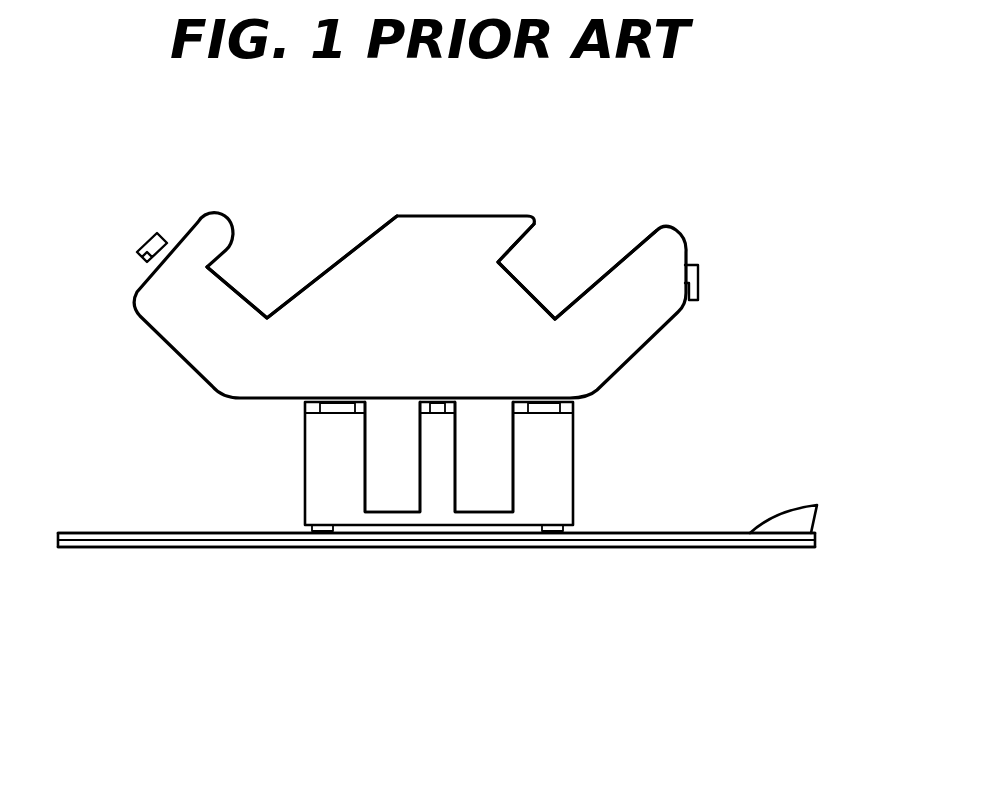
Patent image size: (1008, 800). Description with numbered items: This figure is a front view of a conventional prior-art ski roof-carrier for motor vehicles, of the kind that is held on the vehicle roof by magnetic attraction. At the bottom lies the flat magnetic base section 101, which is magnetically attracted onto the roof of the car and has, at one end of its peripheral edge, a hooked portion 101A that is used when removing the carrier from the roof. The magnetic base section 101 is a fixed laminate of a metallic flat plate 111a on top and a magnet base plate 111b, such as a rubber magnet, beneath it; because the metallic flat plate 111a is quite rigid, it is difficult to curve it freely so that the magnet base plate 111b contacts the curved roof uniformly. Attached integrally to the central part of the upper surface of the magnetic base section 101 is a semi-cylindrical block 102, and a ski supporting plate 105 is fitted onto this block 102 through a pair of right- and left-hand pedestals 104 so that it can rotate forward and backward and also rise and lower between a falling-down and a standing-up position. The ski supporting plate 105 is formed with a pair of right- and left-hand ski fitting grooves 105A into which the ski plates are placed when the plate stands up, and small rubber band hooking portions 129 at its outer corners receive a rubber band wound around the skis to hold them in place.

The magnetic base section 101 is at (655, 532).
The hooked portion 101A is at (818, 518).
The semi-cylindrical block 102 is at (573, 435).
The pedestals 104 is at (393, 498).
The ski supporting plate 105 is at (457, 215).
The ski fitting grooves 105A is at (270, 253).
The metallic flat plate 111a is at (113, 537).
The magnet base plate 111b is at (172, 543).
The rubber band hooking portions 129 is at (140, 245).